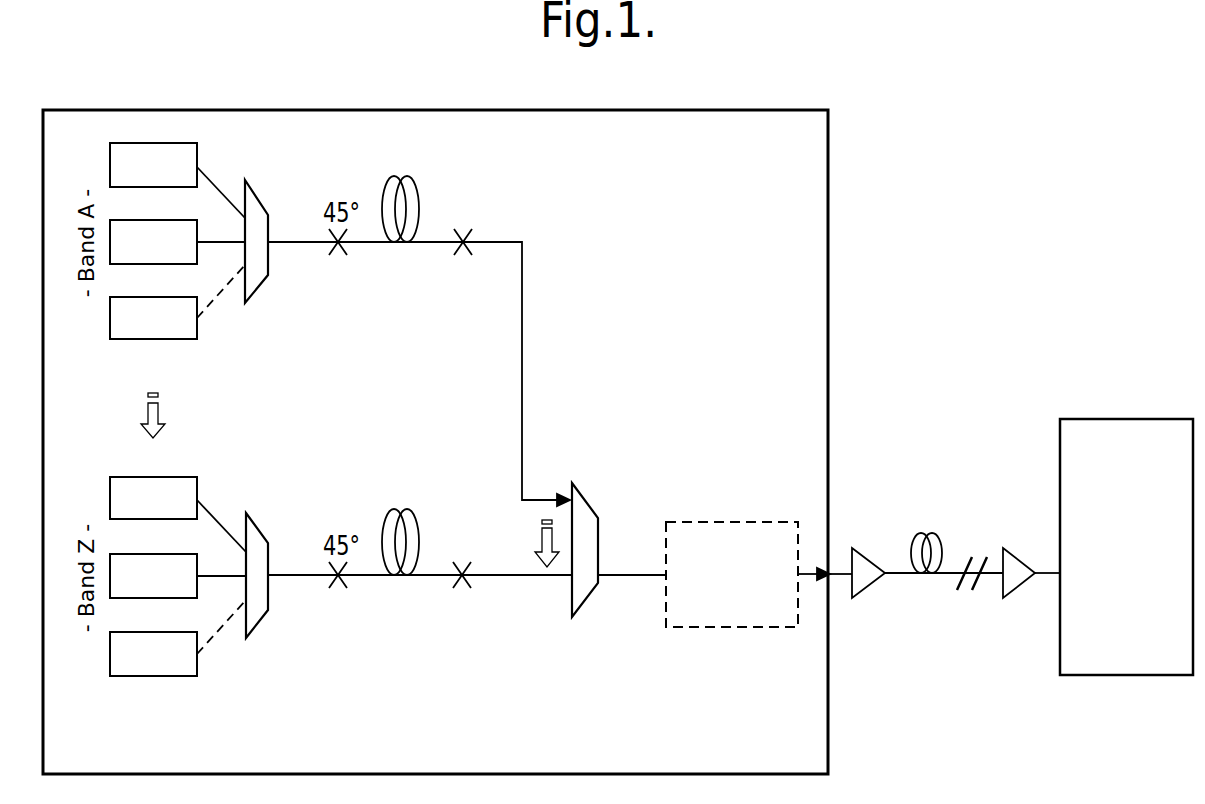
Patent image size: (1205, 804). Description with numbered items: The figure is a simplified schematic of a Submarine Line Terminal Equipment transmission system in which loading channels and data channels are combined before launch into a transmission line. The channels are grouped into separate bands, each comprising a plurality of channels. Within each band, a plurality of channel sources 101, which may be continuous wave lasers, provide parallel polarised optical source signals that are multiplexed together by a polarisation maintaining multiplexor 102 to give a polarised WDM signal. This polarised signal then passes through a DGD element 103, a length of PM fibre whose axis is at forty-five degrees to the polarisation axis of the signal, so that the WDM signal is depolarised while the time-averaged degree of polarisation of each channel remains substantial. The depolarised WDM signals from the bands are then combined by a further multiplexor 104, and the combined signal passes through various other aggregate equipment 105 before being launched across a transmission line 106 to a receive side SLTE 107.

The channel sources 101 is at (133, 178).
The polarisation maintaining multiplexor 102 is at (258, 197).
The DGD element 103 is at (420, 190).
The further multiplexor 104 is at (588, 500).
The aggregate equipment 105 is at (712, 588).
The transmission line 106 is at (915, 591).
The receive side SLTE 107 is at (1106, 560).